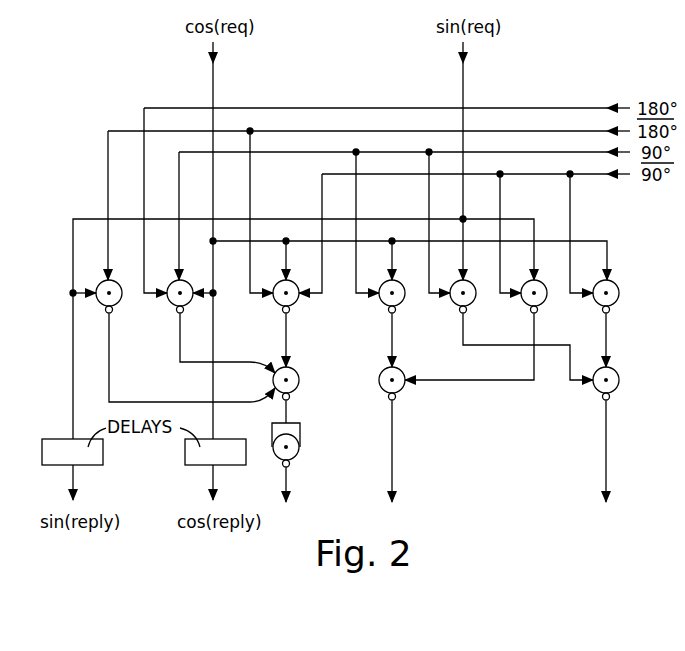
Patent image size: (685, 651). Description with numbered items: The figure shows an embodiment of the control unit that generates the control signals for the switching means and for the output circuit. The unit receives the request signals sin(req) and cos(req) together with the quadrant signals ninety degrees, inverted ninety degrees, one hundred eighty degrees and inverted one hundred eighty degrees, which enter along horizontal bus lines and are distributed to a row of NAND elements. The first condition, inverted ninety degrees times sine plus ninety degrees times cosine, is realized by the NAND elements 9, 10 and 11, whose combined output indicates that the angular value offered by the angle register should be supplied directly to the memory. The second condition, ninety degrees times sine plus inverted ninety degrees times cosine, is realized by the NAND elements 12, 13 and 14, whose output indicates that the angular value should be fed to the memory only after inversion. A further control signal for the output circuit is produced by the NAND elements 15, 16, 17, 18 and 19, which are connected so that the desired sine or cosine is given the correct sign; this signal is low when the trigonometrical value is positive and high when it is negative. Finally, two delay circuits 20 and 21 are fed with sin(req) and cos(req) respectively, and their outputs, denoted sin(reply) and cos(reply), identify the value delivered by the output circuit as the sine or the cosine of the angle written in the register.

The NAND element 9 is at (388, 305).
The NAND element 10 is at (530, 305).
The NAND element 11 is at (387, 389).
The NAND element 12 is at (459, 305).
The NAND element 13 is at (602, 305).
The NAND element 14 is at (601, 389).
The NAND element 15 is at (282, 305).
The NAND element 16 is at (176, 305).
The NAND element 17 is at (105, 305).
The NAND element 18 is at (291, 389).
The NAND element 19 is at (291, 456).
The delay circuit 20 is at (103, 455).
The delay circuit 21 is at (185, 459).